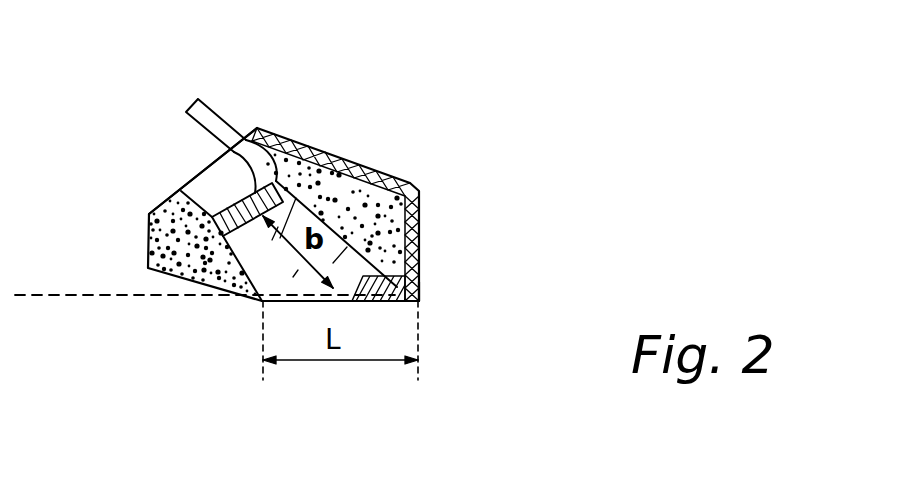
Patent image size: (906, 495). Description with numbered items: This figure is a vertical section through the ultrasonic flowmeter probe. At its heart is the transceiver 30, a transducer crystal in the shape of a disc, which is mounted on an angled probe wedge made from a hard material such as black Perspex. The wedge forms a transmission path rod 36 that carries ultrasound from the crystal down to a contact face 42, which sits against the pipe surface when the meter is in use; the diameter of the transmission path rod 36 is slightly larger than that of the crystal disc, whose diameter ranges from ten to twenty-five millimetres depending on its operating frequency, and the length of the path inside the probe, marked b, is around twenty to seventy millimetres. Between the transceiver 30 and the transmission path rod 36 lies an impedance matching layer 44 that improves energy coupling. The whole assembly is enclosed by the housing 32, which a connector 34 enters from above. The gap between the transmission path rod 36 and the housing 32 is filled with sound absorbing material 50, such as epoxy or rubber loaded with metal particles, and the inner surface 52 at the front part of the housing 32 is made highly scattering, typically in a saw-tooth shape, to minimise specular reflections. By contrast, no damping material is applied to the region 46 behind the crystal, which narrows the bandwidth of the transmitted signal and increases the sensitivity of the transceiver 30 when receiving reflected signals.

The transceiver 30 is at (264, 133).
The housing 32 is at (372, 165).
The connector 34 is at (216, 112).
The transmission path rod 36 is at (400, 287).
The contact face 42 is at (393, 303).
The impedance matching layer 44 is at (224, 238).
The region behind the crystal 46 is at (202, 180).
The sound absorbing material 50 is at (152, 243).
The inner surface 52 is at (409, 262).